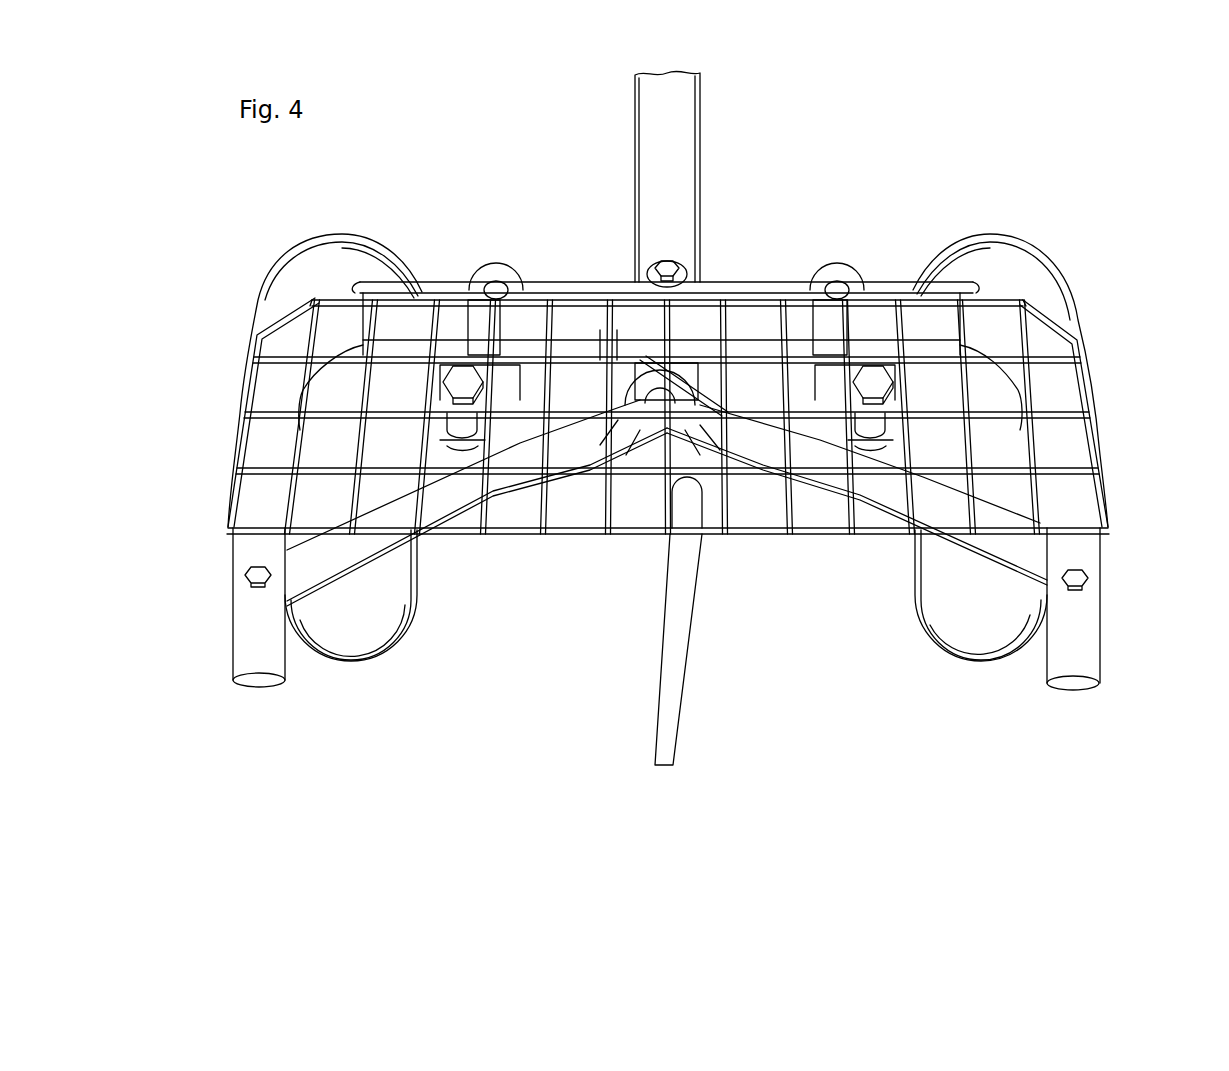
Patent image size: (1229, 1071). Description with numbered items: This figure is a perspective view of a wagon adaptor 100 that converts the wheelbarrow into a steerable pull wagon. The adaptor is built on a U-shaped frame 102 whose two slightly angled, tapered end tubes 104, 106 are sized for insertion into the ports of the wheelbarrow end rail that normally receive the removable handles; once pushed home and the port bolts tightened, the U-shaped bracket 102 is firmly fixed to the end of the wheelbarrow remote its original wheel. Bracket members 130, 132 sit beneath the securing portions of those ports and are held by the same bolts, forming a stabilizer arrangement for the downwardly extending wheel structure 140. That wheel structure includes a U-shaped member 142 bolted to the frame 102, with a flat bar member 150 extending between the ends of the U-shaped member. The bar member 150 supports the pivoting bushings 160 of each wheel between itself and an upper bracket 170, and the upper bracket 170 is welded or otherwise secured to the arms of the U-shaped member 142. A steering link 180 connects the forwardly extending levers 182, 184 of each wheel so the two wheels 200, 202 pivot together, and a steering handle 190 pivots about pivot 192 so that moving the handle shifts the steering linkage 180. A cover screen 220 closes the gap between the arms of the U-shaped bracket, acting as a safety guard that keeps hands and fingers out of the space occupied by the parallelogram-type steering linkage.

The wagon adaptor 100 is at (855, 225).
The U-shaped frame 102 is at (1085, 589).
The end tube 104 is at (1080, 655).
The end tube 106 is at (265, 655).
The bracket member 130 is at (882, 490).
The bracket member 132 is at (440, 497).
The downwardly extending wheel structure 140 is at (750, 366).
The U-shaped member 142 is at (617, 330).
The flat bar member 150 is at (566, 420).
The pivoting bushing 160 is at (492, 450).
The upper bracket 170 is at (478, 276).
The steering link 180 is at (758, 280).
The forwardly extending lever 182 is at (810, 322).
The forwardly extending lever 184 is at (533, 323).
The steering handle 190 is at (700, 152).
The pivot 192 is at (647, 480).
The wheel 200 is at (998, 560).
The wheel 202 is at (362, 645).
The cover screen 220 is at (426, 292).